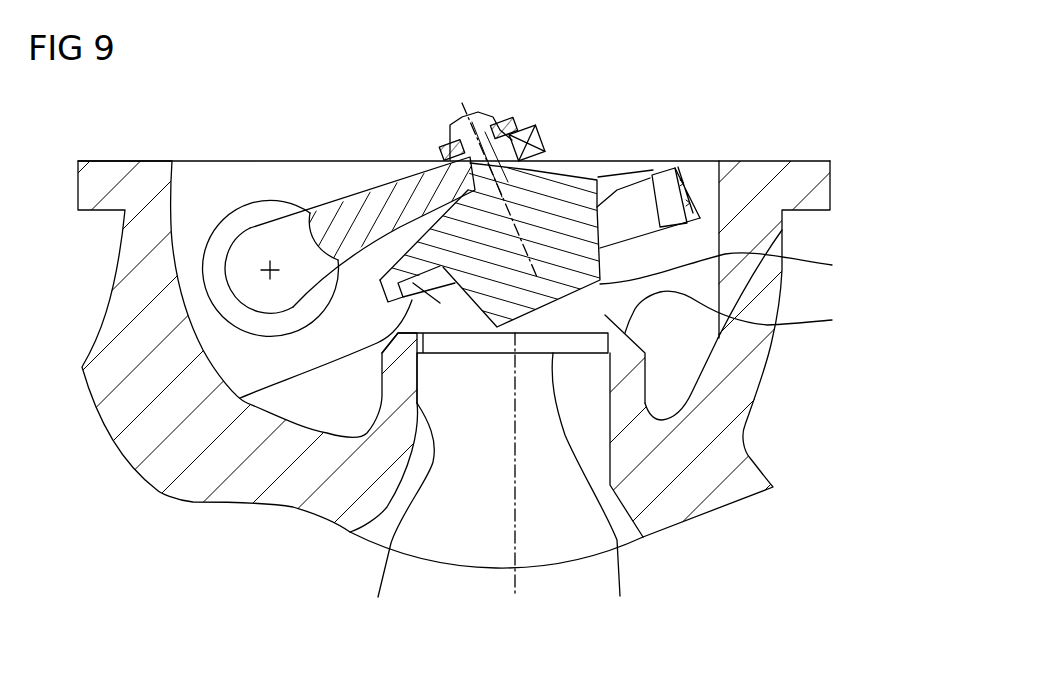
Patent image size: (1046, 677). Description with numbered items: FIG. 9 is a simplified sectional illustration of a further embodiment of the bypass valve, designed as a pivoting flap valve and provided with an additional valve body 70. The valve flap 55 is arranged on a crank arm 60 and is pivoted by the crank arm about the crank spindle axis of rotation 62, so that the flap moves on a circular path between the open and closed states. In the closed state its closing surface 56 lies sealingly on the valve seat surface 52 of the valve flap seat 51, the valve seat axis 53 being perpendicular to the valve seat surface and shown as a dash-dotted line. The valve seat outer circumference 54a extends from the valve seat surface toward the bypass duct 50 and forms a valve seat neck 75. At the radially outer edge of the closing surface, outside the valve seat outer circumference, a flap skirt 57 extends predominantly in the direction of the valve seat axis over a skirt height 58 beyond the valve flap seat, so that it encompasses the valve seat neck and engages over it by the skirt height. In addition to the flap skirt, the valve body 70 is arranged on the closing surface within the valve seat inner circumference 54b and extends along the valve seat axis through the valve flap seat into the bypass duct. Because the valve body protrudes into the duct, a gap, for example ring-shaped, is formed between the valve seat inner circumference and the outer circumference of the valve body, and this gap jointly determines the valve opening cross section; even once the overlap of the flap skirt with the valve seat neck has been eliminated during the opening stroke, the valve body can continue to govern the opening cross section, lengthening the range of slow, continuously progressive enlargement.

The bypass duct 50 is at (532, 464).
The valve flap seat 51 is at (488, 338).
The valve seat surface 52 is at (743, 312).
The valve seat axis 53 is at (513, 588).
The valve seat outer circumference 54a is at (647, 378).
The valve seat inner circumference 54b is at (602, 489).
The valve flap 55 is at (583, 193).
The closing surface 56 is at (163, 473).
The flap skirt 57 is at (640, 203).
The skirt height 58 is at (683, 192).
The crank arm 60 is at (348, 222).
The crank spindle axis of rotation 62 is at (268, 264).
The valve body 70 is at (730, 268).
The valve seat neck 75 is at (399, 514).